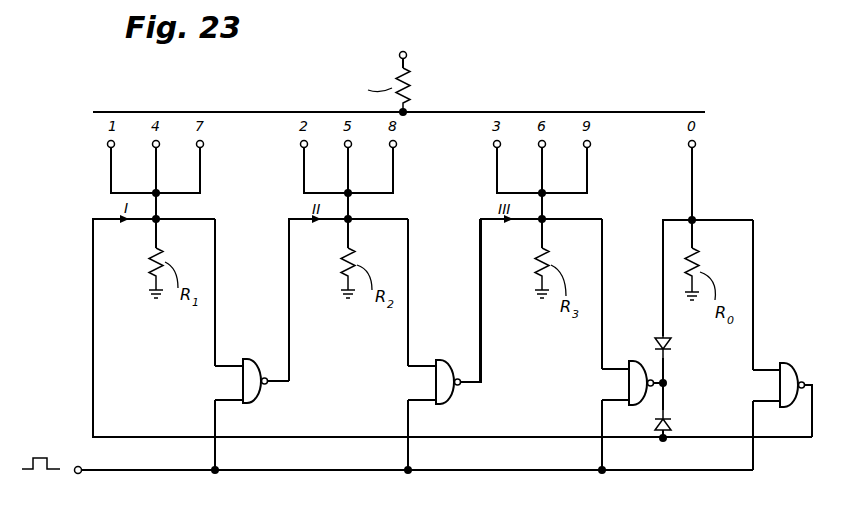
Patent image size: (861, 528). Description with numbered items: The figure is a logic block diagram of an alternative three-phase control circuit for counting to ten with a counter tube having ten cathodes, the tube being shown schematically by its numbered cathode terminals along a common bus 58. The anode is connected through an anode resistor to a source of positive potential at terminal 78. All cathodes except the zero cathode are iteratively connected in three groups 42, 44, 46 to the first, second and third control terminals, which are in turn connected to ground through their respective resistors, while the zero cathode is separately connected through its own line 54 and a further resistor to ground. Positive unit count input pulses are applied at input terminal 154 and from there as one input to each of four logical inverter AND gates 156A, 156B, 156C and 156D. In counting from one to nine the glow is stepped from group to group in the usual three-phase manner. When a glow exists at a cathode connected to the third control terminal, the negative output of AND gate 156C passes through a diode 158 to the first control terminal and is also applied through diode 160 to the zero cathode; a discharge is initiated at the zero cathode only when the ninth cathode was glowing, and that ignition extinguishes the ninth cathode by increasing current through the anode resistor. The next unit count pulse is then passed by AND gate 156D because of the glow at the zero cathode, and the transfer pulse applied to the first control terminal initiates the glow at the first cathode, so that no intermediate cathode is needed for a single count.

The terminal 78 is at (408, 53).
The common bus line 58 is at (616, 110).
The first group of input terminals (1,4,7) 42 is at (188, 194).
The second group of input terminals (2,5,8) 44 is at (383, 195).
The third group of input terminals (3,6,9) 46 is at (576, 195).
The zero input terminal line 54 is at (710, 182).
The diode 160 is at (674, 346).
The diode 158 is at (674, 420).
The logical inverter AND gate 156A is at (256, 399).
The logical inverter AND gate 156B is at (449, 400).
The AND gate 156C is at (643, 405).
The AND gate 156D is at (795, 407).
The input terminal 154 is at (76, 474).